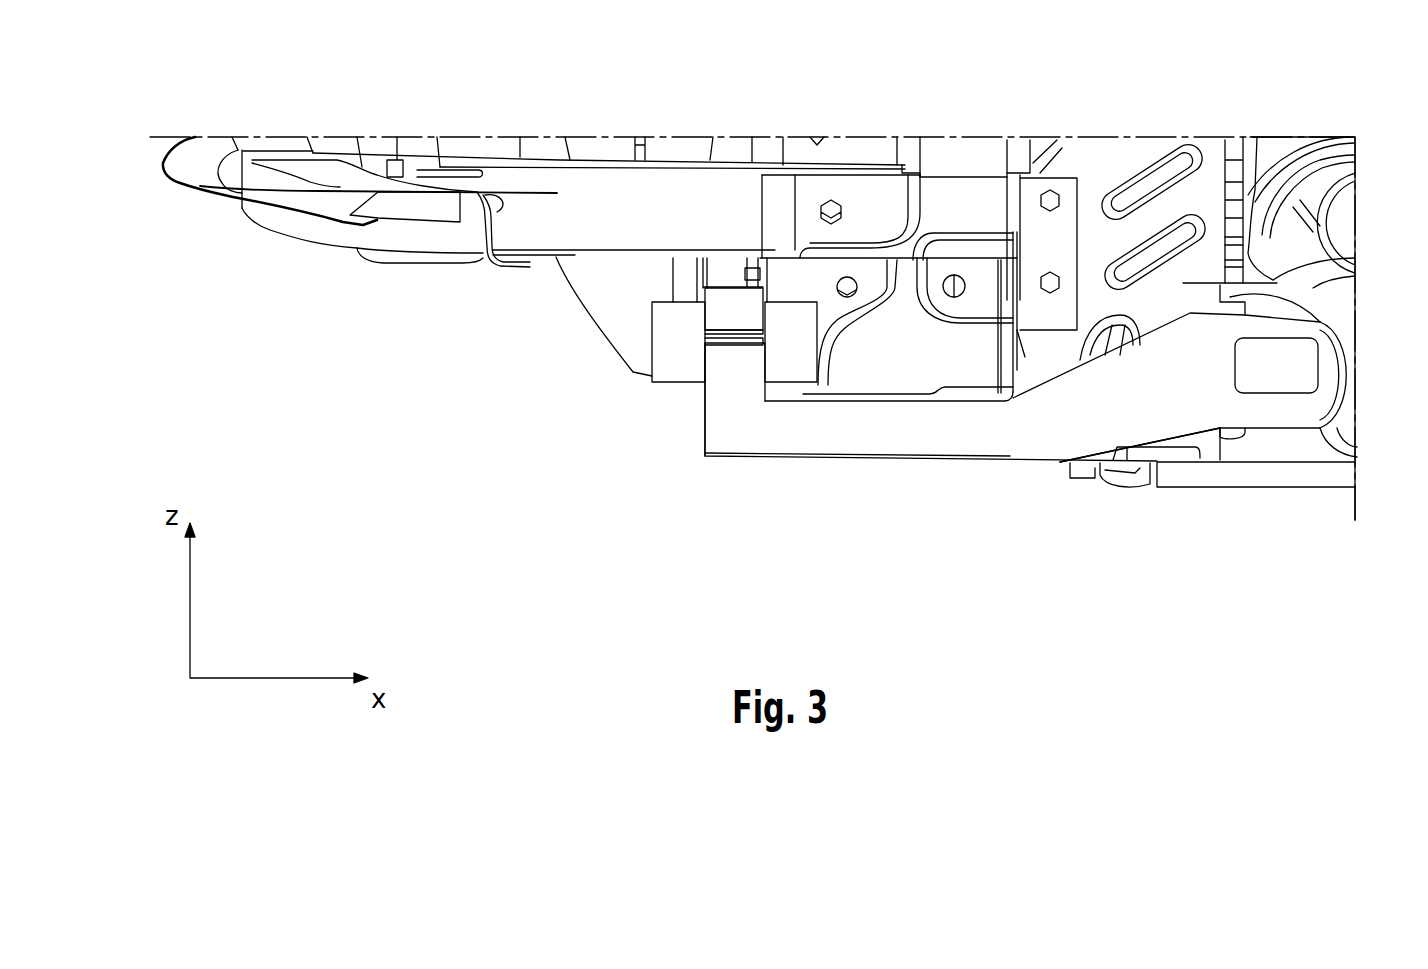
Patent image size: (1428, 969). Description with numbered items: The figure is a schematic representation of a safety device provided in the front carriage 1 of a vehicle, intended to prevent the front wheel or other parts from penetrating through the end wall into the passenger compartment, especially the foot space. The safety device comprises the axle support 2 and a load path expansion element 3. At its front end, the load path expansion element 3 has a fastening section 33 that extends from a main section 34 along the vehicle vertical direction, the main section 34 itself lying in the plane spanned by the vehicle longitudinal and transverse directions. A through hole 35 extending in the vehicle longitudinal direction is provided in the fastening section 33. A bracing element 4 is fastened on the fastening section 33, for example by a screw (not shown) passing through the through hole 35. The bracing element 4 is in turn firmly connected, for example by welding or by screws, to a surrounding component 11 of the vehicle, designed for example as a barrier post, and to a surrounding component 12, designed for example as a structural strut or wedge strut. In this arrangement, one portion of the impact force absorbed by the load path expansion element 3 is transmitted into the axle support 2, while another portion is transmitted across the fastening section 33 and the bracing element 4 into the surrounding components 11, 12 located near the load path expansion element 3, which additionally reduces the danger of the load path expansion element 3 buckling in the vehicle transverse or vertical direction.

The front carriage 1 is at (1322, 118).
The axle support 2 is at (1268, 442).
The load path expansion element 3 is at (913, 440).
The bracing element 4 is at (665, 348).
The surrounding component 11 is at (950, 345).
The surrounding component 12 is at (582, 286).
The fastening section 33 is at (717, 380).
The main section 34 is at (878, 445).
The through hole 35 is at (747, 338).